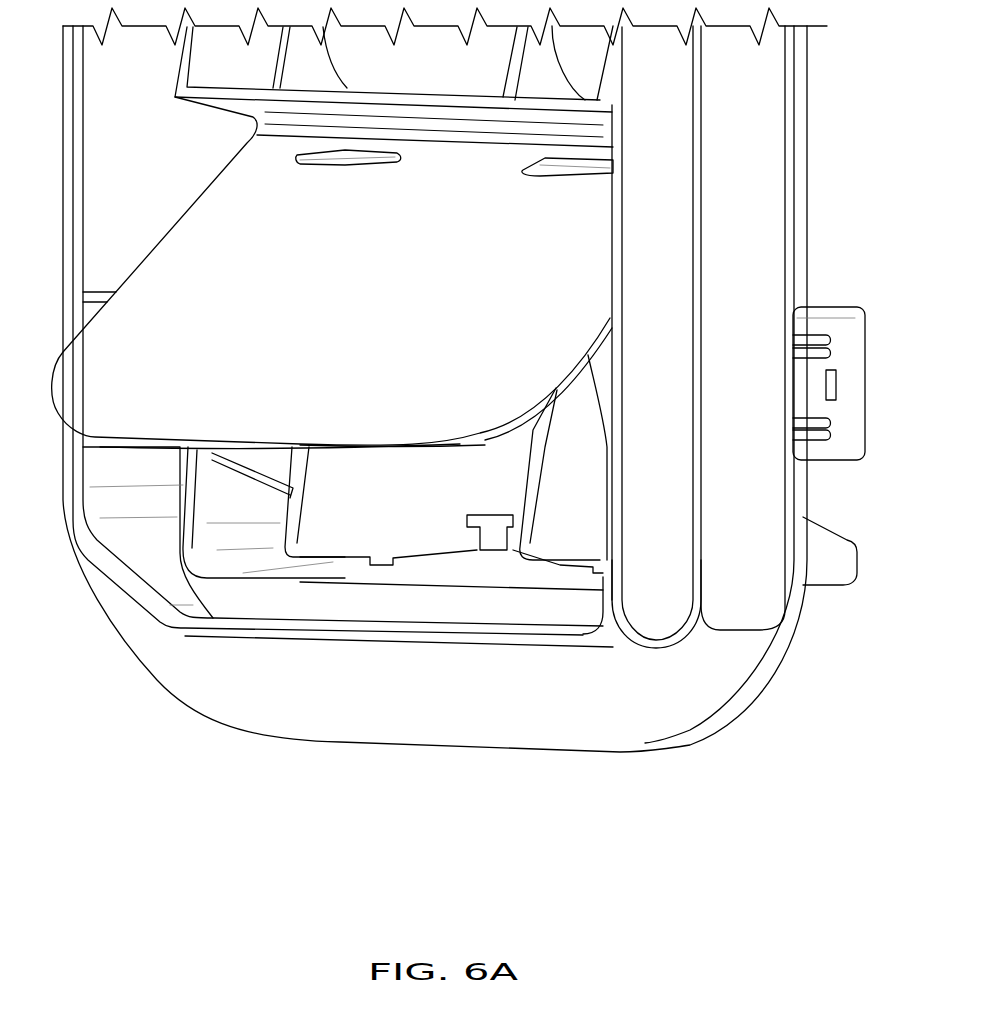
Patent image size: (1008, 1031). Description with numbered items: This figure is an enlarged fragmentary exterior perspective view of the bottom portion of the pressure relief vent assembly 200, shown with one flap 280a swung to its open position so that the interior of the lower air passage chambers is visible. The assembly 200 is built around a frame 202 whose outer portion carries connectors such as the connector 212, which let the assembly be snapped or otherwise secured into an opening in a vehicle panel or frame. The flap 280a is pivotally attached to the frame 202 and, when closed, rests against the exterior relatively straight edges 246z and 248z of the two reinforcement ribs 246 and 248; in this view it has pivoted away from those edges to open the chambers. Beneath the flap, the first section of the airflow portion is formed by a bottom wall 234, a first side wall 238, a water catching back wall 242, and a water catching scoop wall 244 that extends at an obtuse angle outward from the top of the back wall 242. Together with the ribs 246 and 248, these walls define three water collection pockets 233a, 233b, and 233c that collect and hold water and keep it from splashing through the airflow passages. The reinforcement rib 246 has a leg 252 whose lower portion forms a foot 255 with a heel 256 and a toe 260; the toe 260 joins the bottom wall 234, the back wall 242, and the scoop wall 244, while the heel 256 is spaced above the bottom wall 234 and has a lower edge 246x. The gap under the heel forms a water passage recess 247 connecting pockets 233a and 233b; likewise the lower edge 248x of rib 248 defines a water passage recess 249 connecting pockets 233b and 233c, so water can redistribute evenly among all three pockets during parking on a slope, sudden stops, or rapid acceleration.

The pressure relief vent assembly 200 is at (132, 752).
The frame 202 is at (807, 130).
The connector 212 is at (865, 383).
The flap 280a is at (146, 253).
The first water collection pocket 233a is at (260, 537).
The second water collection pocket 233b is at (457, 563).
The third water collection pocket 233c is at (575, 636).
The bottom wall 234 is at (430, 535).
The first side wall 238 is at (233, 518).
The water catching back wall 242 is at (497, 543).
The water catching scoop wall 244 is at (463, 507).
The reinforcement rib 246 is at (401, 525).
The lower edge 246x is at (338, 580).
The exterior relatively straight edge 246z is at (286, 452).
The water passage recess 247 is at (360, 570).
The reinforcement rib 248 is at (573, 528).
The lower edge 248x is at (550, 563).
The exterior relatively straight edge 248z is at (540, 435).
The water passage recess 249 is at (575, 577).
The leg 252 is at (437, 505).
The foot 255 is at (367, 513).
The heel 256 is at (320, 540).
The toe 260 is at (428, 533).